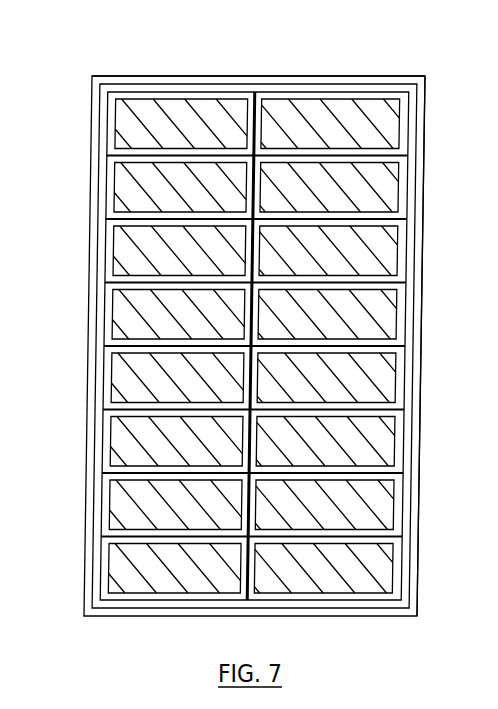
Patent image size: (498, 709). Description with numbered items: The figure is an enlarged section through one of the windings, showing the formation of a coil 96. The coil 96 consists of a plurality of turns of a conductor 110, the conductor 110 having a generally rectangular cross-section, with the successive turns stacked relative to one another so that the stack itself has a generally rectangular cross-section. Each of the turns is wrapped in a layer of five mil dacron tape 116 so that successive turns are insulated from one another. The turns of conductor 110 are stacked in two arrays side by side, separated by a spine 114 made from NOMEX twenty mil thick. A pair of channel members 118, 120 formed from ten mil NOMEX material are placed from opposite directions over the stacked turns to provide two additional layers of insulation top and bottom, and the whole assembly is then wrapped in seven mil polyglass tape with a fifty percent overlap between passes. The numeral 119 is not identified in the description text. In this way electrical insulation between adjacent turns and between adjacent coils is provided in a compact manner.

The coil 96 is at (188, 76).
The conductor 110 is at (127, 126).
The spine 114 is at (264, 102).
The dacron tape 116 is at (232, 96).
The channel member 118 is at (425, 93).
The outer frame top edge 119 is at (392, 76).
The channel member 120 is at (99, 92).